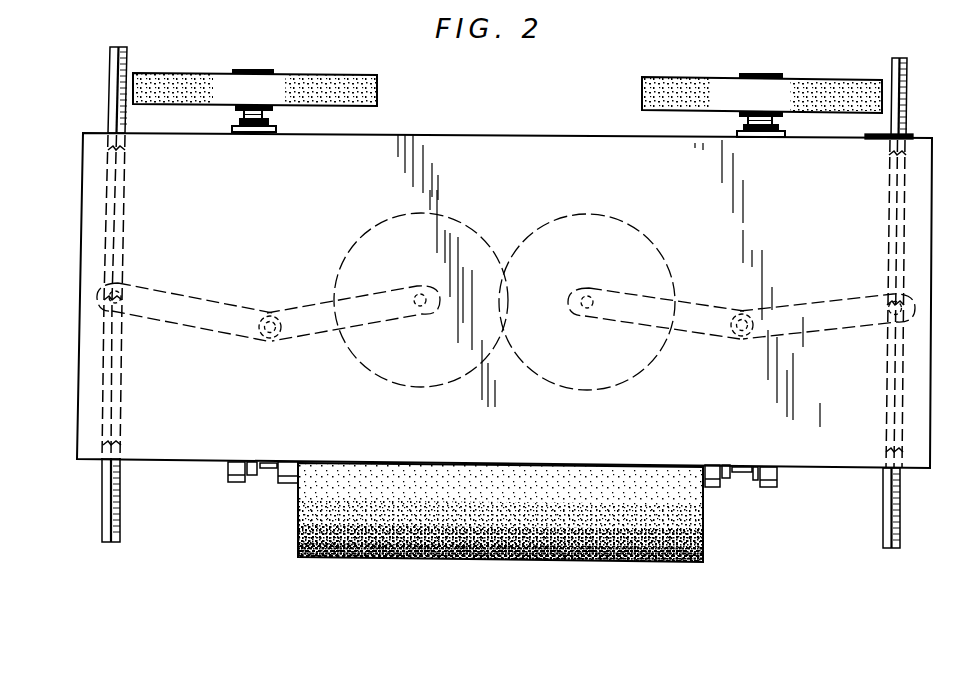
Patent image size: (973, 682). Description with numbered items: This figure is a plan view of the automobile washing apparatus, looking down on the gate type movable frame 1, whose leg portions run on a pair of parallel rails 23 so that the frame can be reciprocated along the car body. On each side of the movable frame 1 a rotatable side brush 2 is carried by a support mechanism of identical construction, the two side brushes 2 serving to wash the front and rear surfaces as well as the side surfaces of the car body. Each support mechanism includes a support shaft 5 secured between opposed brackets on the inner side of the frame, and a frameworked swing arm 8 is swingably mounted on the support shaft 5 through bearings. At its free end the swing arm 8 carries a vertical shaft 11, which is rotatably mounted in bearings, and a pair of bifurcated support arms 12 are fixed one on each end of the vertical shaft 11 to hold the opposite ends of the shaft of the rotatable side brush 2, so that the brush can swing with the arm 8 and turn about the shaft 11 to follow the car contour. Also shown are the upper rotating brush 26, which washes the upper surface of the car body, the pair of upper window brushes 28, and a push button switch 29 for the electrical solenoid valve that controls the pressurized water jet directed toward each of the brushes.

The gate type movable frame 1 is at (531, 136).
The rotatable side brush 2 is at (487, 235).
The support shaft 5 is at (100, 296).
The swing arm 8 is at (198, 300).
The vertical shaft 11 is at (262, 340).
The bifurcated support arm 12 is at (305, 306).
The rail 23 is at (127, 58).
The upper rotating brush 26 is at (447, 562).
The upper window brush 28 is at (333, 74).
The push button switch 29 is at (908, 134).